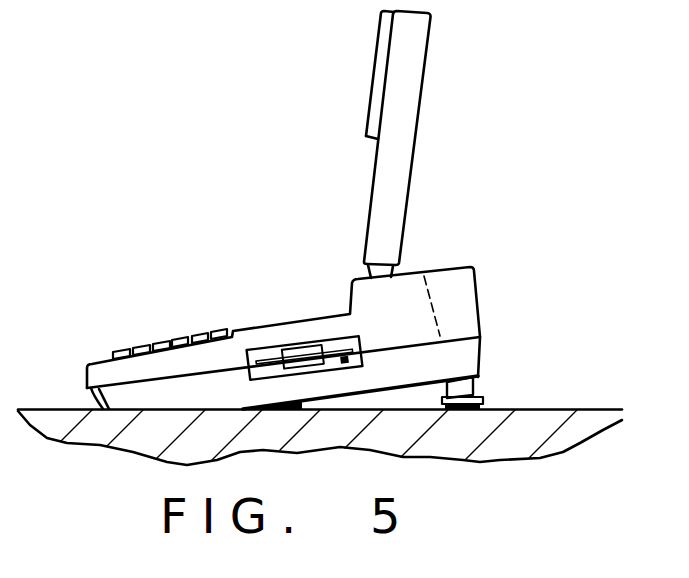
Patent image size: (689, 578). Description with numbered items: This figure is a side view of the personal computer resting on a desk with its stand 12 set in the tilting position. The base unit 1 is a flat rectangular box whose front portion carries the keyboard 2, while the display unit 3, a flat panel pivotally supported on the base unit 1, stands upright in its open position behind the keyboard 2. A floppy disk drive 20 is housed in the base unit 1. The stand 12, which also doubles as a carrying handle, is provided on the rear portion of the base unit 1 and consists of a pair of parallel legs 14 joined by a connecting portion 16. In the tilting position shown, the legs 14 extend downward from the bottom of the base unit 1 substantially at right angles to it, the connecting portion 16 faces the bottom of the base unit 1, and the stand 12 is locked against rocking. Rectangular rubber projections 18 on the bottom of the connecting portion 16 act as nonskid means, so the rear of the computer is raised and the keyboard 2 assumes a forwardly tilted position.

The base unit 1 is at (468, 284).
The keyboard 2 is at (185, 340).
The display unit 3 is at (410, 138).
The stand 12 is at (526, 367).
The leg 14 is at (482, 386).
The connecting portion 16 is at (484, 399).
The rubber projection 18 is at (466, 412).
The floppy disk drive 20 is at (310, 343).